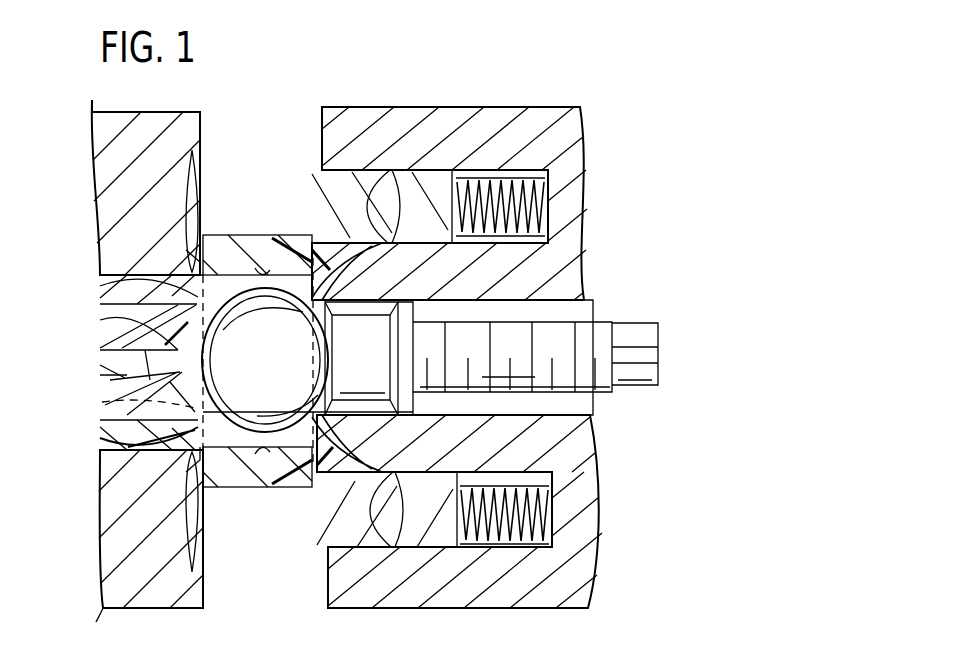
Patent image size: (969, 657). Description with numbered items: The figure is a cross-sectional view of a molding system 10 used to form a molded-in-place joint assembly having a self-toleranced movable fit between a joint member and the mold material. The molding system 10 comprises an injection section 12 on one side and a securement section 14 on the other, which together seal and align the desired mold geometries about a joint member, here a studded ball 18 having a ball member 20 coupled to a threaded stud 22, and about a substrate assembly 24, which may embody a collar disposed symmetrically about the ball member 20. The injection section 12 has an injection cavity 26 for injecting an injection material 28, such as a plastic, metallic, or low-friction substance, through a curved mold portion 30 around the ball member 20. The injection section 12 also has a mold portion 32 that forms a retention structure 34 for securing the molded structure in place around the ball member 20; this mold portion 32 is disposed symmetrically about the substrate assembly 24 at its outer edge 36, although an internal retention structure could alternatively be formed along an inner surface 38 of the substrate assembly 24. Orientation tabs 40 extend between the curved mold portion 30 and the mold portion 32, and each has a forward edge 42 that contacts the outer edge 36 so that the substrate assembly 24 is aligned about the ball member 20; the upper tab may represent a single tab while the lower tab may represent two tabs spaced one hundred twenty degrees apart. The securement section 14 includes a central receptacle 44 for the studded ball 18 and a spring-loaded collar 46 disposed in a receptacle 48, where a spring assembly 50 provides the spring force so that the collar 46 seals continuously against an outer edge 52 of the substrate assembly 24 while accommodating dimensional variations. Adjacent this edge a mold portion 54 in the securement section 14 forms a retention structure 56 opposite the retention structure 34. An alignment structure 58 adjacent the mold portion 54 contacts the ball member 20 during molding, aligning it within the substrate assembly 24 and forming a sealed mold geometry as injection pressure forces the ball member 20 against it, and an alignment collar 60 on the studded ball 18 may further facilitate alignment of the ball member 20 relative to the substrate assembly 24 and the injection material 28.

The molding system 10 is at (612, 79).
The injection section 12 is at (96, 178).
The securement section 14 is at (584, 148).
The studded ball 18 is at (665, 312).
The ball member 20 is at (282, 372).
The threaded stud 22 is at (615, 395).
The substrate assembly 24 is at (226, 236).
The injection cavity 26 is at (108, 348).
The injection material 28 is at (102, 375).
The curved mold portion 30 is at (105, 325).
The mold portion 32 is at (190, 255).
The retention structure 34 is at (192, 242).
The outer edge 36 is at (100, 404).
The inner surface 38 is at (258, 268).
The orientation tabs 40 is at (100, 290).
The forward edge 42 is at (100, 268).
The central receptacle 44 is at (585, 420).
The spring-loaded collar 46 is at (314, 248).
The receptacle 48 is at (522, 170).
The spring assembly 50 is at (478, 190).
The outer edge 52 is at (333, 342).
The mold portion 54 is at (368, 195).
The retention structure 56 is at (312, 278).
The alignment structure 58 is at (382, 240).
The alignment collar 60 is at (417, 415).